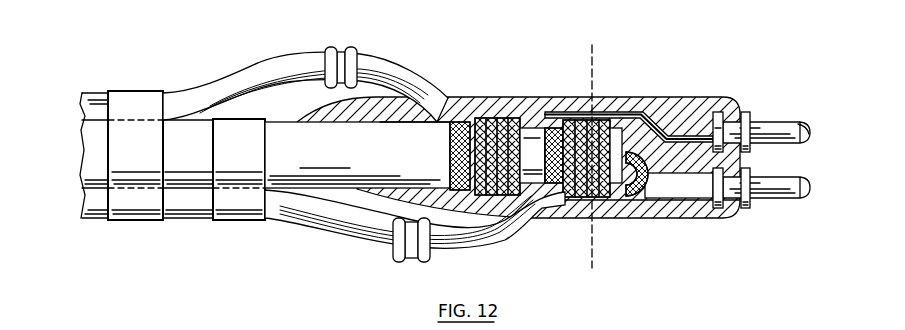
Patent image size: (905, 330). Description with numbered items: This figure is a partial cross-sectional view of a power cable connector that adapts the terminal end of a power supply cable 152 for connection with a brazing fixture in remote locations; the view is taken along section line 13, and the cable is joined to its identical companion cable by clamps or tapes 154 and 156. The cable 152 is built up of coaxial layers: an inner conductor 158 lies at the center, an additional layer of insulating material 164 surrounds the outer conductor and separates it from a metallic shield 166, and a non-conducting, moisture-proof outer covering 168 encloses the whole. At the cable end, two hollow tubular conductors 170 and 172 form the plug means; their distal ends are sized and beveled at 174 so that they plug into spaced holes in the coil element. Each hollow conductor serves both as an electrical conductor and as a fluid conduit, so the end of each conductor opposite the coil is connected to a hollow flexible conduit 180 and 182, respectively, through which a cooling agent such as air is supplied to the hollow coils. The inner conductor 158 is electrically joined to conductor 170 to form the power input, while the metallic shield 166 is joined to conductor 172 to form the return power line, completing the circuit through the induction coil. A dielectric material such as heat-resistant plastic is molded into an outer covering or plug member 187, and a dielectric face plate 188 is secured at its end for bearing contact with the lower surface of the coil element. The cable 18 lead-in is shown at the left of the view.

The coaxial cable 18 is at (90, 91).
The section line 13- 13 is at (575, 50).
The cable 152 is at (279, 133).
The clamp or tape 154 is at (130, 198).
The clamp or tape 156 is at (246, 203).
The inner conductor 158 is at (628, 197).
The layer of insulating material 164 is at (530, 137).
The metallic shield 166 is at (460, 122).
The outer covering 168 is at (415, 139).
The hollow tubular conductor 170 is at (795, 190).
The hollow tubular conductor 172 is at (770, 126).
The beveled distal end 174 is at (804, 144).
The hollow flexible conduit 180 is at (335, 229).
The hollow flexible conduit 182 is at (308, 62).
The plug member 187 is at (708, 105).
The dielectric face plate 188 is at (738, 212).